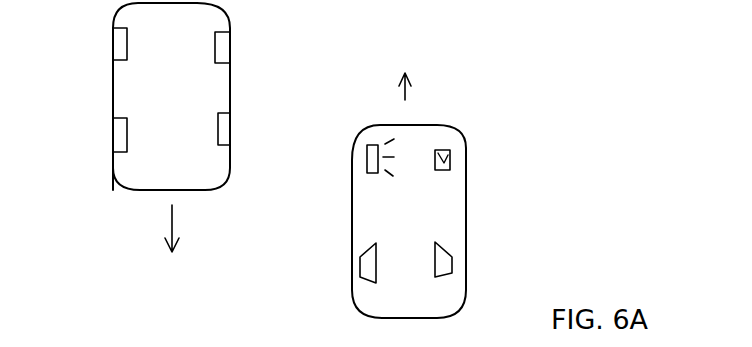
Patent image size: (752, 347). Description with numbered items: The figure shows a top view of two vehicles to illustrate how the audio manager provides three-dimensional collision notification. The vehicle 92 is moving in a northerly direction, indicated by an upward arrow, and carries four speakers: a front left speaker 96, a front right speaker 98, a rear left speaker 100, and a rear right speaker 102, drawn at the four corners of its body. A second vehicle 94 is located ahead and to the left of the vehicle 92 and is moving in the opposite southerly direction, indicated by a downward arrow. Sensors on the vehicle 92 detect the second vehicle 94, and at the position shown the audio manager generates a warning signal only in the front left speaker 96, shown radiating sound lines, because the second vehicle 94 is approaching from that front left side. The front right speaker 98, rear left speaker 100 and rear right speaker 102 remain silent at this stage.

The vehicle 92 is at (352, 171).
The second vehicle 94 is at (113, 82).
The front left speaker 96 is at (368, 147).
The front right speaker 98 is at (443, 150).
The rear left speaker 100 is at (360, 264).
The rear right speaker 102 is at (452, 260).